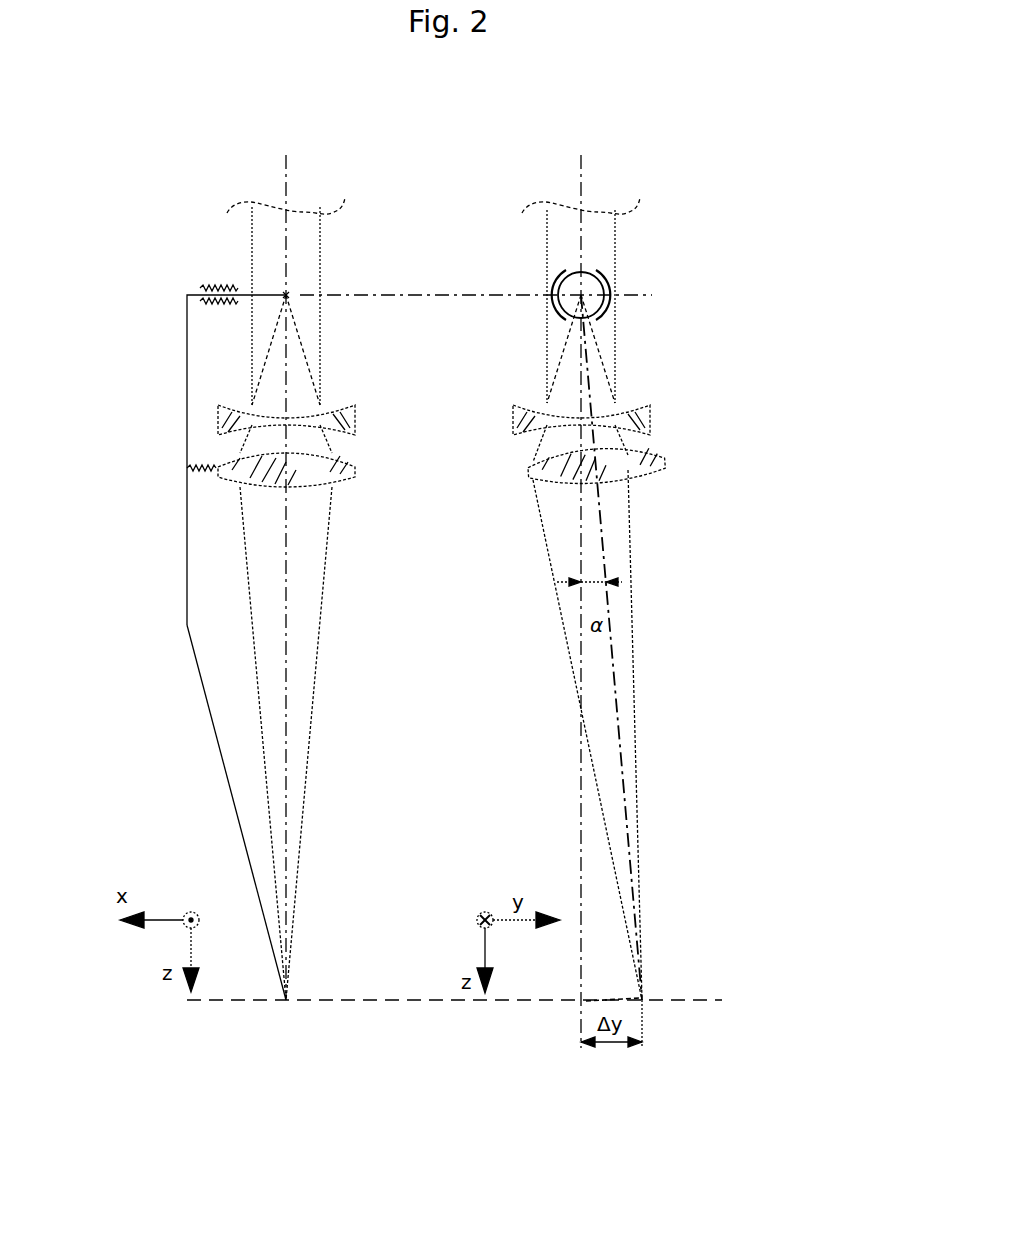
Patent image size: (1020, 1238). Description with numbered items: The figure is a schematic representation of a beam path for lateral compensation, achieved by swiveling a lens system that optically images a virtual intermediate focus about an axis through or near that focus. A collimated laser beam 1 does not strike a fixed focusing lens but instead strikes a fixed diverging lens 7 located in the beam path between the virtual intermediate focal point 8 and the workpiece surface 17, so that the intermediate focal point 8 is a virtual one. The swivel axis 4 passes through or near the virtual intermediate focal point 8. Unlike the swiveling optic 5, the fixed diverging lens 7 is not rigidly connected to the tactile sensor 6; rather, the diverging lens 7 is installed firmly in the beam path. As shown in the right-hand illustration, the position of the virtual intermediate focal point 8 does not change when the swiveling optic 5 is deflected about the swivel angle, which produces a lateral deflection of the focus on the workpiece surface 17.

The collimated laser beam 1 is at (370, 296).
The virtual intermediate focal point 8 is at (357, 313).
The swivel axis 4 is at (193, 455).
The fixed diverging lens 7 is at (375, 409).
The movable imaging optic 5 is at (383, 456).
The tactile sensor 6 is at (193, 812).
The workpiece surface 17 is at (482, 1033).